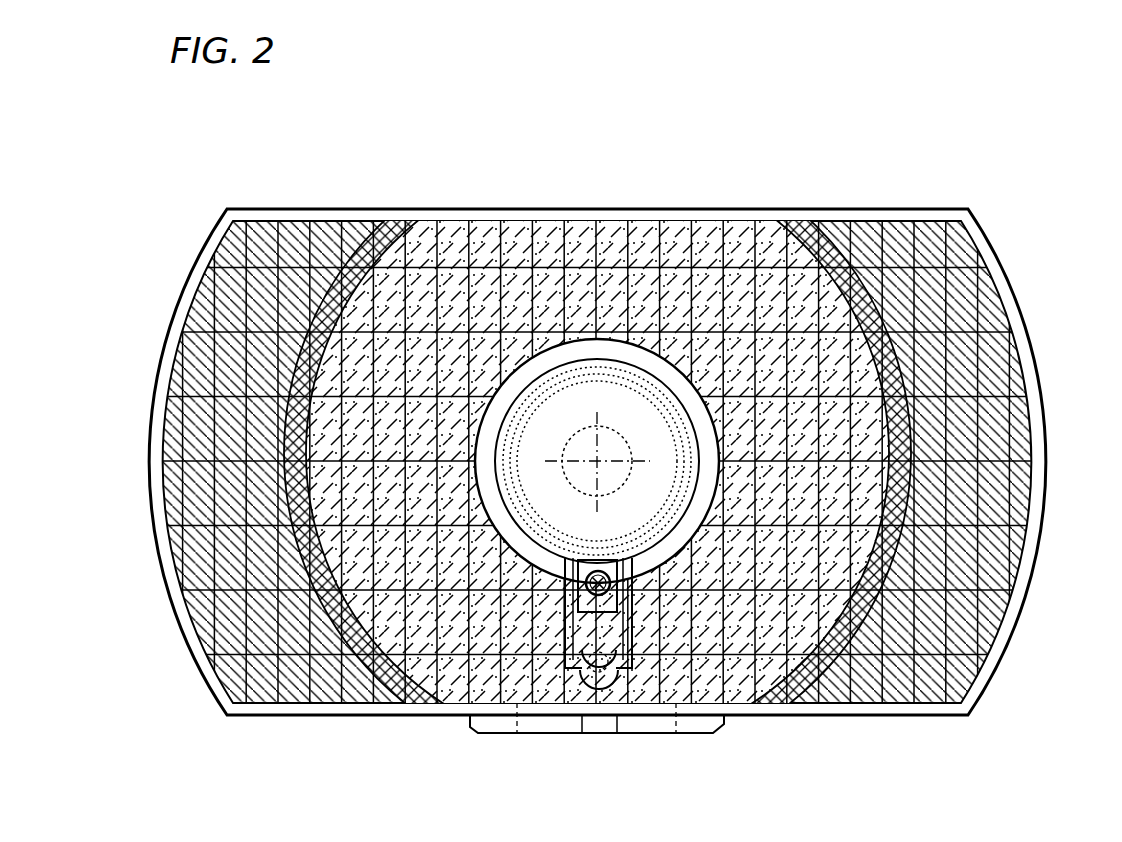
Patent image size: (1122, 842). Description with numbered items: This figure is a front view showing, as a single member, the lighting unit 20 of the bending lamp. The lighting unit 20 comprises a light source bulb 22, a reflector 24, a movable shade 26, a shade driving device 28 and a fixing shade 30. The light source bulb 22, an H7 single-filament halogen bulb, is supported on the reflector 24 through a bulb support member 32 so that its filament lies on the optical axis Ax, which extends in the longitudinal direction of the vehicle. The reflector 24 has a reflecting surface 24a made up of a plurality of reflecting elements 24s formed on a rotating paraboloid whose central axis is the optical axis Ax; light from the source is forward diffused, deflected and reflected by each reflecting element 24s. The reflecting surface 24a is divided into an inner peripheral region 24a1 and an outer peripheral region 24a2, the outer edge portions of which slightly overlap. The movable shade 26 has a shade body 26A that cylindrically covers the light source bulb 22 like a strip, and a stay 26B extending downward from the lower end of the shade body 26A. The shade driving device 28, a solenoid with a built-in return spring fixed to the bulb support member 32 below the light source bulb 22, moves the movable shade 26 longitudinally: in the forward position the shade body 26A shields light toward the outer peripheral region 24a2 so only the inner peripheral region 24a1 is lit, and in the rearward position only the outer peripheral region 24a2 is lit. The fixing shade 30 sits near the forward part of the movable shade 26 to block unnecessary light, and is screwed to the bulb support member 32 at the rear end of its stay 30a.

The lighting unit 20 is at (601, 472).
The light source bulb 22 is at (580, 418).
The reflector 24 is at (633, 453).
The reflecting surface 24a is at (634, 453).
The inner peripheral region 24a1 is at (512, 300).
The outer peripheral region 24a2 is at (287, 297).
The reflecting element 24s is at (803, 618).
The movable shade 26 is at (690, 452).
The shade body 26A is at (497, 460).
The stay 26B is at (565, 608).
The shade driving device 28 is at (476, 707).
The fixing shade 30 is at (585, 367).
The stay 30a is at (661, 678).
The bulb support member 32 is at (566, 757).
The optical axis Ax is at (597, 461).